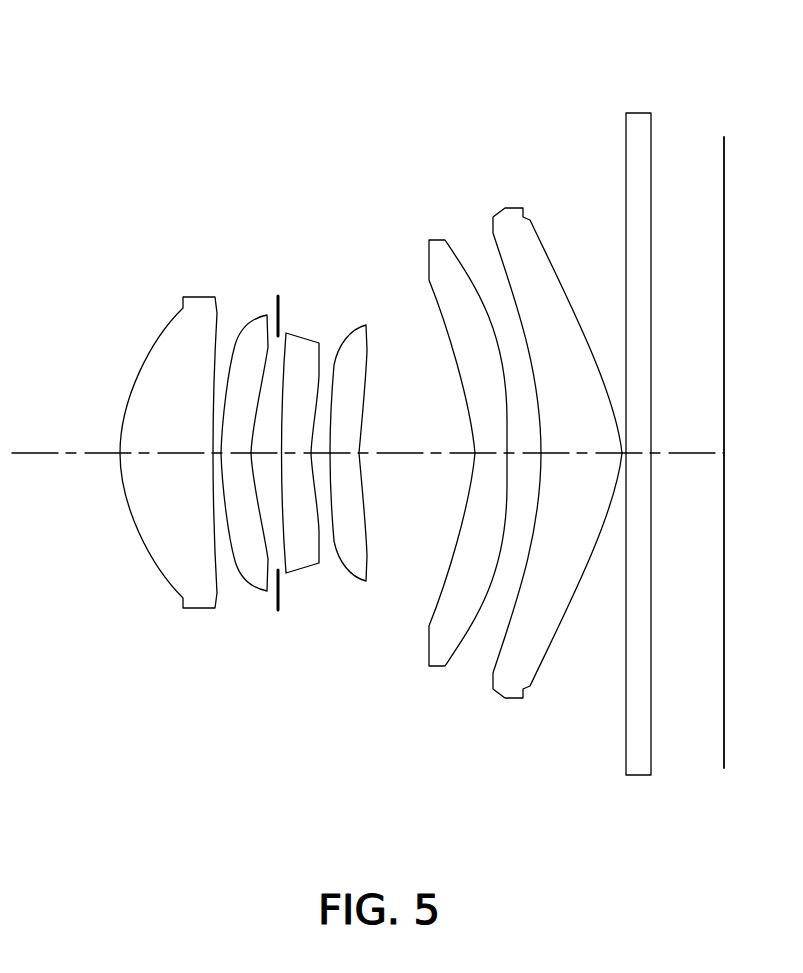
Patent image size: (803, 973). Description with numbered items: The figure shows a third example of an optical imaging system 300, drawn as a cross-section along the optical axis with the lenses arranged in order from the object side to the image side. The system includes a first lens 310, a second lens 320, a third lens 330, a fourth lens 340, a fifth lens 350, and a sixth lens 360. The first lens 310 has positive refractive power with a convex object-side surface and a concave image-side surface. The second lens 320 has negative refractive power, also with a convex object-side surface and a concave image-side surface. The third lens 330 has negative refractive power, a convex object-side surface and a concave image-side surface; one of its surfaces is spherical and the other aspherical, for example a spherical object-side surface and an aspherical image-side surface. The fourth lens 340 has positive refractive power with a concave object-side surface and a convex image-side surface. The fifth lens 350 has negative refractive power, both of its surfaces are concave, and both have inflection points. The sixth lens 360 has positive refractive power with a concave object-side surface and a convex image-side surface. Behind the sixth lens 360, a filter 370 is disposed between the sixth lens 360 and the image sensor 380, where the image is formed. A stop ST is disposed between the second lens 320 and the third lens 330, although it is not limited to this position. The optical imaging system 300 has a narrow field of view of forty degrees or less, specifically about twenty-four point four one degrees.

The optical imaging system 300 is at (282, 197).
The first lens 310 is at (173, 573).
The second lens 320 is at (255, 573).
The third lens 330 is at (300, 563).
The fourth lens 340 is at (357, 555).
The fifth lens 350 is at (452, 653).
The sixth lens 360 is at (520, 688).
The filter 370 is at (638, 768).
The image sensor 380 is at (724, 162).
The stop ST is at (276, 300).